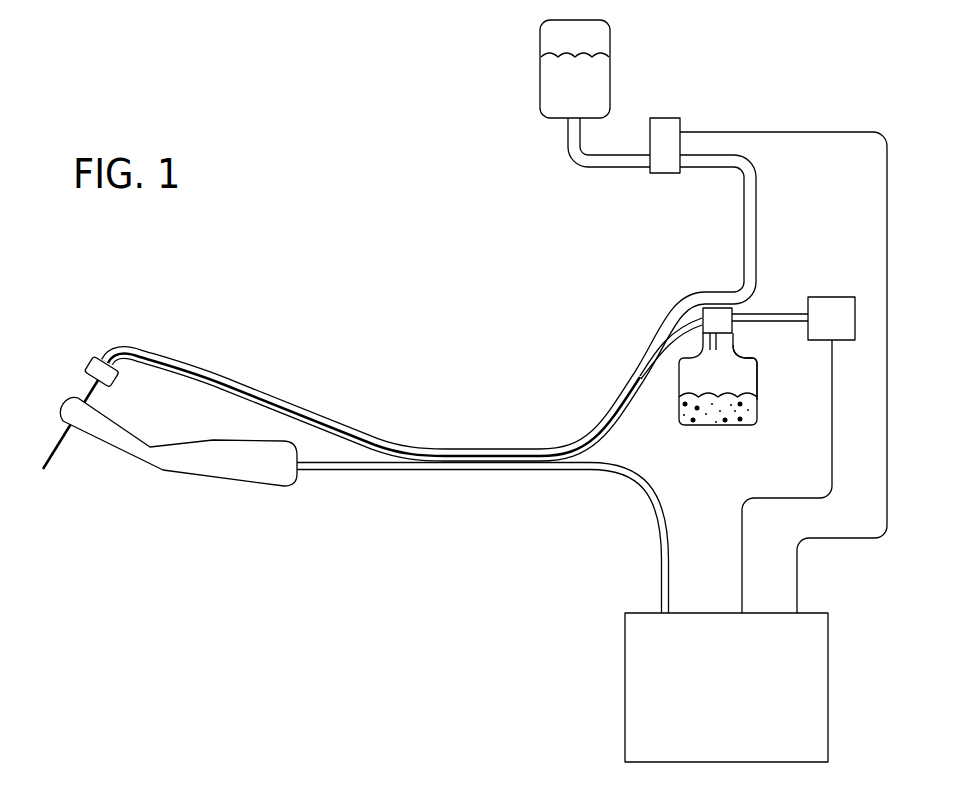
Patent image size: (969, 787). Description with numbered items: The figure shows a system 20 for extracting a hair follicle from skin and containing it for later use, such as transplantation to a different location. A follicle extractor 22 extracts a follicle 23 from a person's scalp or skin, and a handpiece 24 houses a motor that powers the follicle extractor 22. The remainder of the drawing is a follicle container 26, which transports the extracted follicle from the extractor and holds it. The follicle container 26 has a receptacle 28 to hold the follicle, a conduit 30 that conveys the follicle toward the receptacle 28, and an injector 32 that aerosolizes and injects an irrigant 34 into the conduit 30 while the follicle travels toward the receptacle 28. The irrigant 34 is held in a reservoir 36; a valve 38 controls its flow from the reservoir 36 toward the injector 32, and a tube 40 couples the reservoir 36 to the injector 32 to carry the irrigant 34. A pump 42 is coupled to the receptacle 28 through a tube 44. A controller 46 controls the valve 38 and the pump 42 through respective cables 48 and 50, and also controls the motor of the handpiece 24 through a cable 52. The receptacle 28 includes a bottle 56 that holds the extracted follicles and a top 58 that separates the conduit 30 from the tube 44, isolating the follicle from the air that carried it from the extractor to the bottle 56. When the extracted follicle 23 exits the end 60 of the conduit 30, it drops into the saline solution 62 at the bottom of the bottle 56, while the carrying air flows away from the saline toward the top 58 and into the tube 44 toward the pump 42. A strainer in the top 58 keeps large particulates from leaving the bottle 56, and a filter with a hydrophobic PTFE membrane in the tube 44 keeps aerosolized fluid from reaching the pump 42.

The system 20 is at (397, 247).
The follicle extractor 22 is at (88, 390).
The follicle 23 is at (742, 425).
The handpiece 24 is at (230, 482).
The follicle container 26 is at (99, 319).
The receptacle 28 is at (663, 342).
The conduit 30 is at (217, 383).
The injector 32 is at (88, 362).
The irrigant 34 is at (555, 75).
The reservoir 36 is at (540, 105).
The valve 38 is at (665, 118).
The tube 40 is at (577, 162).
The pump 42 is at (828, 297).
The tube 44 is at (770, 311).
The controller 46 is at (625, 663).
The cable 48 is at (795, 132).
The cable 50 is at (742, 538).
The cable 52 is at (487, 472).
The bottle 56 is at (720, 427).
The top 58 is at (733, 327).
The end 60 is at (755, 372).
The saline solution 62 is at (700, 398).